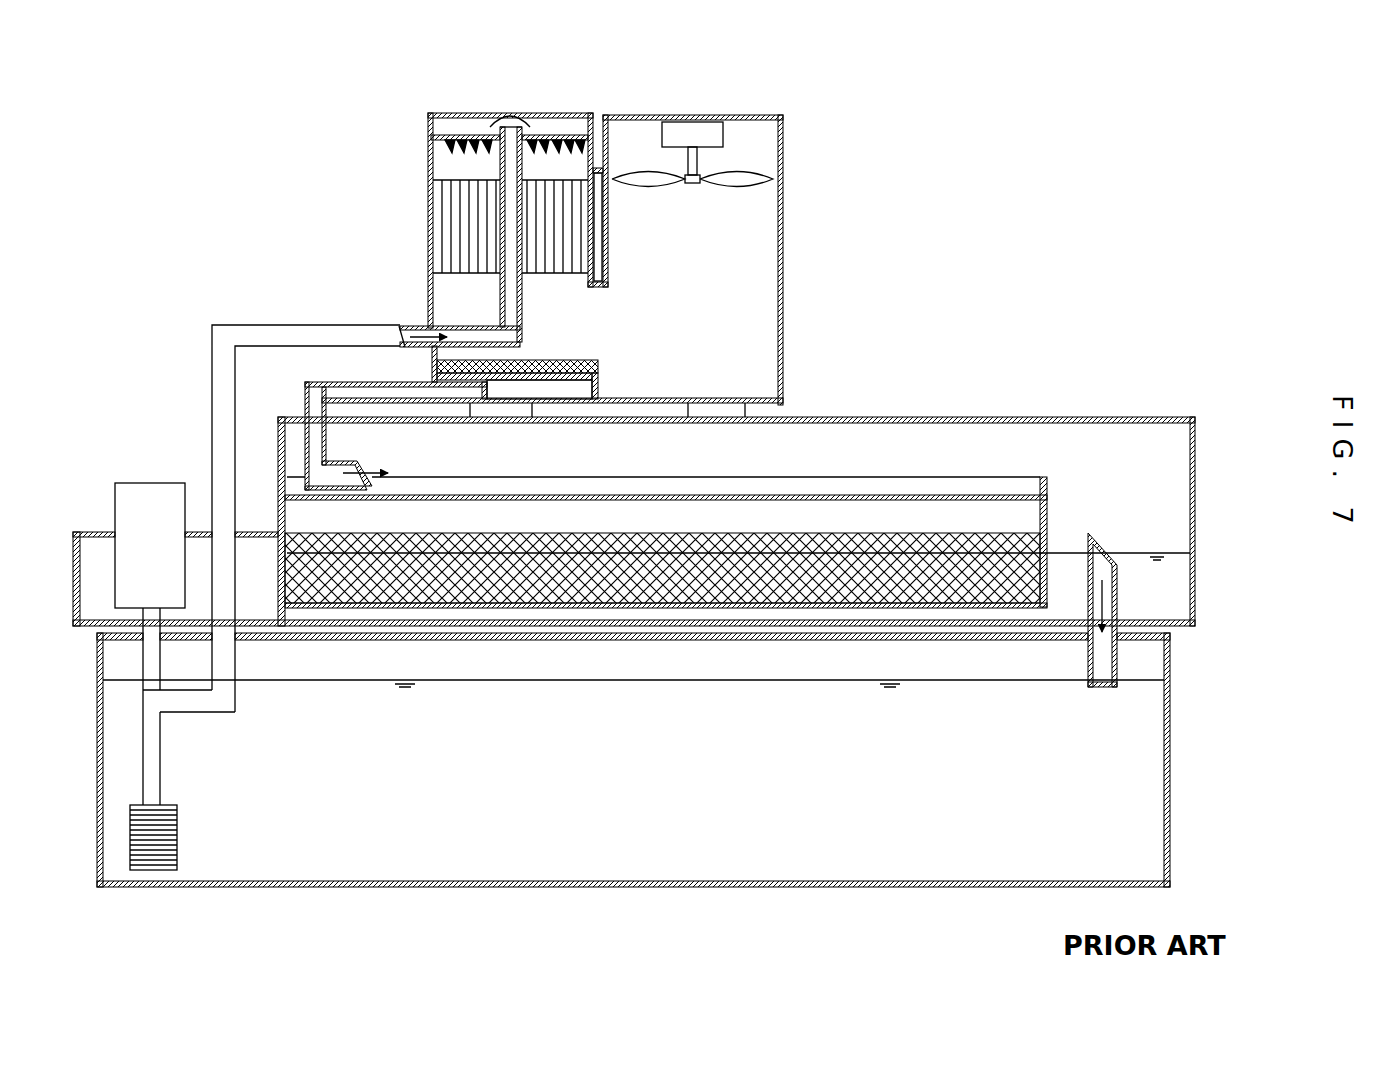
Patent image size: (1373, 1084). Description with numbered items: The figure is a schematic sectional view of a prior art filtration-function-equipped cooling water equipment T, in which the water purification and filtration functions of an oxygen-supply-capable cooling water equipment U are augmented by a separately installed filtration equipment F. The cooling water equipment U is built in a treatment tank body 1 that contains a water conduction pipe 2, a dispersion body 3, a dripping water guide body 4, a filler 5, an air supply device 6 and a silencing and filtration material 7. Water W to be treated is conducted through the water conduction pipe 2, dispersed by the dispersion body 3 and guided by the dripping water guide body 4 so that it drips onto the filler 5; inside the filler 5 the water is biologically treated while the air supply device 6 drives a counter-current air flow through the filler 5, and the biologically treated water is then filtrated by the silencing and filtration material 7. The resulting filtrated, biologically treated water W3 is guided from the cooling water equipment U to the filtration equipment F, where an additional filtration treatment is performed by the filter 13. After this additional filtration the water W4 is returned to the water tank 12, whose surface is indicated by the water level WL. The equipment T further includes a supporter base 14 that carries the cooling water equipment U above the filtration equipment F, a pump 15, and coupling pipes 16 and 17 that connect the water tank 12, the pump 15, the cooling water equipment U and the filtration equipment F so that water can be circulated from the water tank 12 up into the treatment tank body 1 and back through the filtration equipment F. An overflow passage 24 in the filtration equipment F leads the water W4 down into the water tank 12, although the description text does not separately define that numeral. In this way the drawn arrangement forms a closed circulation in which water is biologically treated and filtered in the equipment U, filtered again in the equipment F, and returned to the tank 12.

The treatment tank body 1 is at (428, 178).
The water conduction pipe 2 is at (522, 303).
The dispersion body 3 is at (493, 125).
The dripping water guide body 4 is at (556, 135).
The filler 5 is at (455, 218).
The air supply device 6 is at (728, 137).
The silencing and filtration material 7 is at (585, 358).
The water tank 12 is at (1175, 740).
The filter 13 is at (1047, 537).
The supporter base 14 is at (745, 412).
The pump 15 is at (145, 503).
The coupling pipe 16 is at (255, 325).
The coupling pipe 17 is at (307, 393).
The overflow pipe outlet 24 is at (1117, 590).
The water to be treated W is at (425, 327).
The filtrated, biologically treated water W3 is at (372, 470).
The additionally filtered water W4 is at (1093, 600).
The water level WL is at (1170, 552).
The filtration equipment F is at (1197, 488).
The oxygen-supply-capable cooling water equipment U is at (792, 188).
The filtration-function-equipped cooling water equipment T is at (1088, 247).